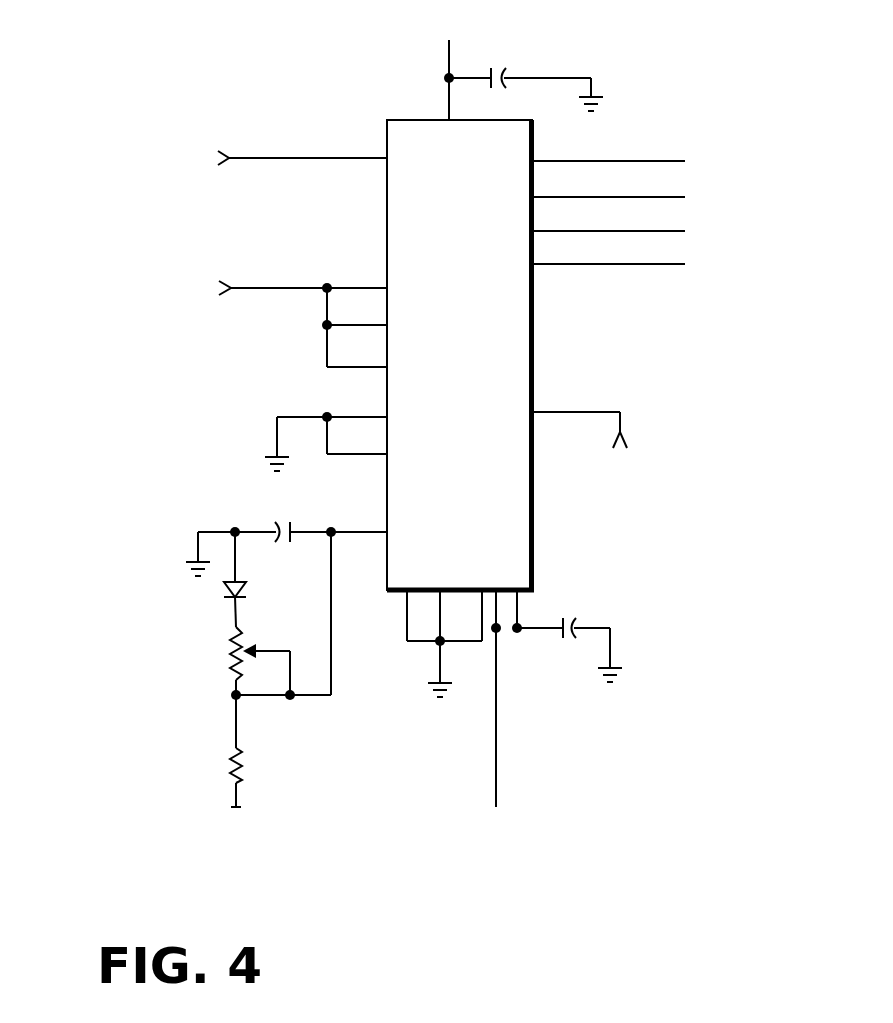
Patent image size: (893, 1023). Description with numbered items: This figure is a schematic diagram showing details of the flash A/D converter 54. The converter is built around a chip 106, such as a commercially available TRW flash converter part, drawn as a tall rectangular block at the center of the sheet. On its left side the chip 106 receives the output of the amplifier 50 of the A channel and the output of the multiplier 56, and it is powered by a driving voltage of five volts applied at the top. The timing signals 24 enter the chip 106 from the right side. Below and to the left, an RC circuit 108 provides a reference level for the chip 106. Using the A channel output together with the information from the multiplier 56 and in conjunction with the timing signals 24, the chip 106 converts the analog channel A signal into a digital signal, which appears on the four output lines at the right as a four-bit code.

The A/D converter 54 is at (194, 102).
The multiplier 56 is at (287, 158).
The amplifier 50 is at (287, 322).
The chip 106 is at (410, 120).
The timing signals 24 is at (581, 443).
The RC circuit 108 is at (308, 695).